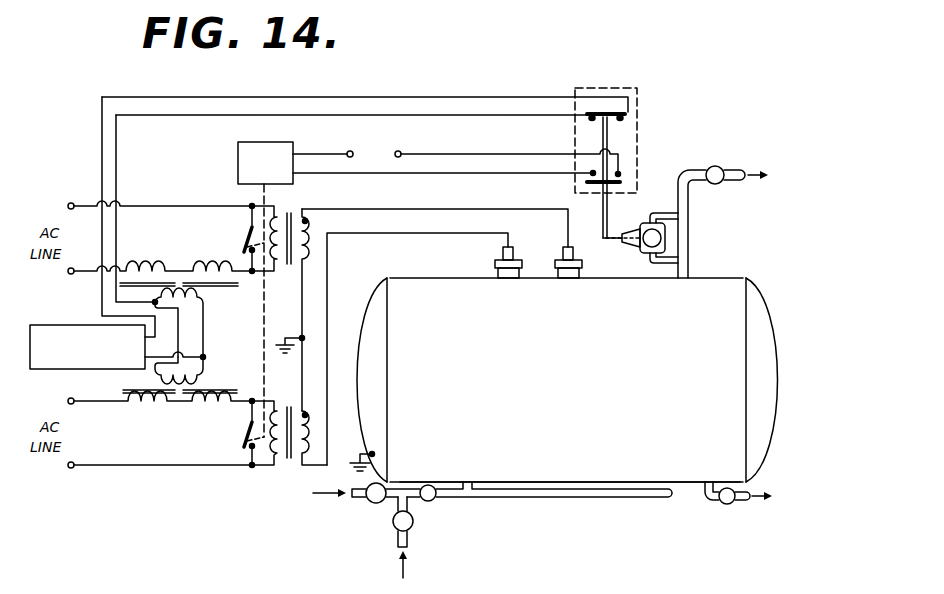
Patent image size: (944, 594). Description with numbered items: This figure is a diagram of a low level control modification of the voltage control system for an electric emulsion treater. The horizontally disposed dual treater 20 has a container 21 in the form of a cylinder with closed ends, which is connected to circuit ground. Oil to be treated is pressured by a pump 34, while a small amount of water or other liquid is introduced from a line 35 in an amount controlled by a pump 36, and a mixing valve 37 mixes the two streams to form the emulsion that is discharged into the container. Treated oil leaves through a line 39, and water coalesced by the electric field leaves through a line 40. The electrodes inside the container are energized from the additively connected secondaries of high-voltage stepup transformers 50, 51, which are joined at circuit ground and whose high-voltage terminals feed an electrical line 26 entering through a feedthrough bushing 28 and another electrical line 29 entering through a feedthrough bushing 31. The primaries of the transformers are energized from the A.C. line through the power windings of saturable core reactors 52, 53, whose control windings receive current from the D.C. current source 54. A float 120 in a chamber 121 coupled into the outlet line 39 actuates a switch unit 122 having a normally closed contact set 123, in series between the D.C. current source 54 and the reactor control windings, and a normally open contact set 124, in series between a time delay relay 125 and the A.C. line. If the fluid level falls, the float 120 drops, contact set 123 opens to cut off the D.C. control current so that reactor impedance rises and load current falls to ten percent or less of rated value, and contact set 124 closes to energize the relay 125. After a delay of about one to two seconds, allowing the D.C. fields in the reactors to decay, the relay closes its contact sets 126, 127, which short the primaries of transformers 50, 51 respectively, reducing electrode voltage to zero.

The dual treater 20 is at (460, 270).
The container 21 is at (597, 469).
The electrical line 26 is at (348, 236).
The feedthrough bushing 28 is at (513, 257).
The electrical line 29 is at (384, 208).
The feedthrough bushing 31 is at (578, 264).
The pump 34 is at (368, 501).
The line 35 is at (397, 541).
The pump 36 is at (412, 529).
The mixing valve 37 is at (434, 501).
The line 39 is at (729, 170).
The line 40 is at (736, 503).
The high-voltage stepup transformer 50 is at (289, 272).
The high-voltage stepup transformer 51 is at (286, 405).
The saturable core reactor 52 is at (173, 274).
The saturable core reactor 53 is at (181, 402).
The D.C. current source 54 is at (60, 298).
The float 120 is at (664, 228).
The chamber 121 is at (664, 248).
The switch unit 122 is at (399, 163).
The normally closed contact set 123 is at (626, 110).
The normally open contact set 124 is at (587, 180).
The time delay relay 125 is at (238, 150).
The contact set 126 is at (244, 233).
The contact set 127 is at (244, 446).